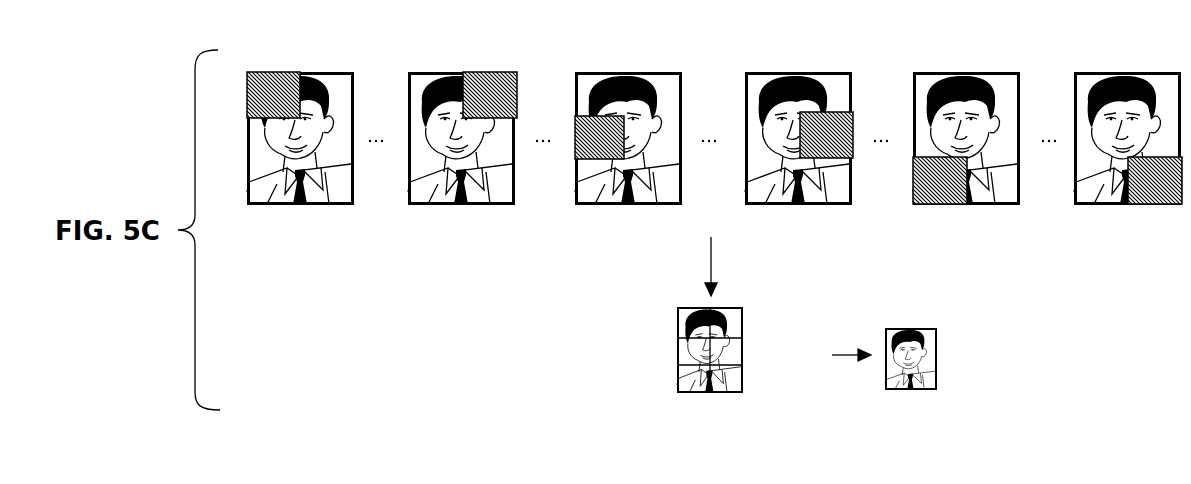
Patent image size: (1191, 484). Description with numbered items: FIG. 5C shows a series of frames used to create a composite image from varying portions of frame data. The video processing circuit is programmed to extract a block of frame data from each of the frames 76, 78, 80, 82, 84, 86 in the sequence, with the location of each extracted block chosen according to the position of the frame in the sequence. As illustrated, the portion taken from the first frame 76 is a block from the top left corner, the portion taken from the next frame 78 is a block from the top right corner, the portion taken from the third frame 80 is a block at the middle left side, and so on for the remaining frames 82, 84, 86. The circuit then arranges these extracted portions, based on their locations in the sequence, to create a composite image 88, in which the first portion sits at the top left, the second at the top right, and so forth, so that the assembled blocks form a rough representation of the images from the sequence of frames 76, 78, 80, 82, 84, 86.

The first frame 76 is at (300, 205).
The next frame 78 is at (460, 205).
The third frame 80 is at (628, 205).
The frame 82 is at (797, 205).
The frame 84 is at (940, 72).
The frame 86 is at (1125, 72).
The composite image 88 is at (937, 352).